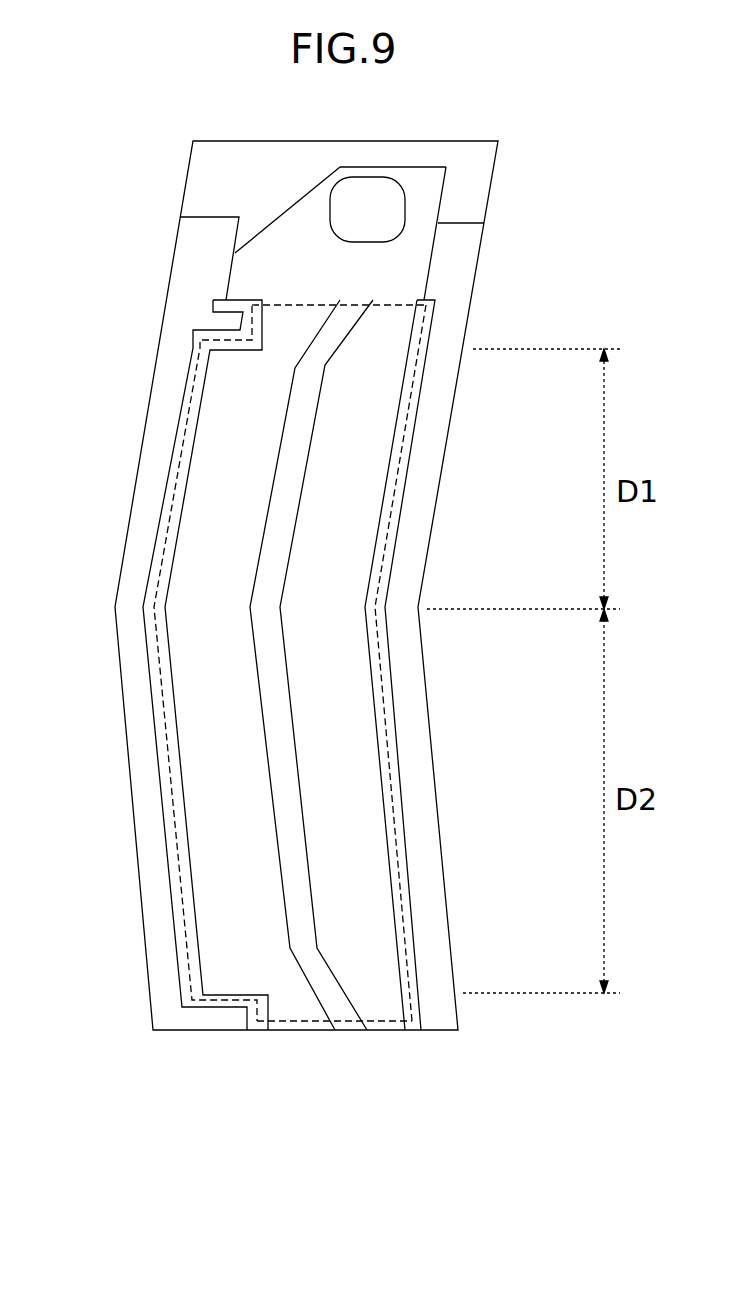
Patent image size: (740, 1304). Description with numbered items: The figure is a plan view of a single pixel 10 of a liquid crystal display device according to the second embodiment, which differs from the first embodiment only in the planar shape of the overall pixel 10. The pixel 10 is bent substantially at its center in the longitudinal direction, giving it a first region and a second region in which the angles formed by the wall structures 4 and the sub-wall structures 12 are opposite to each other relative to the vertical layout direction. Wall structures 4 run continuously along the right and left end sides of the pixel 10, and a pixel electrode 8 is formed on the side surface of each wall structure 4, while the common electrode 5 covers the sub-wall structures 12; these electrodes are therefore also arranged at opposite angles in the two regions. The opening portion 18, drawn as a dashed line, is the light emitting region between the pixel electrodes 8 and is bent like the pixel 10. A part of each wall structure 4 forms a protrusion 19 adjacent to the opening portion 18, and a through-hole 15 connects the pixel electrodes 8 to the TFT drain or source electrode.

The wall structure 4 is at (148, 815).
The common electrode 5 is at (250, 148).
The pixel electrode 8 is at (227, 428).
The pixel 10 is at (304, 615).
The sub-wall structure 12 is at (328, 998).
The through-hole 15 is at (373, 197).
The opening portion 18 is at (387, 1021).
The protrusion 19 is at (188, 250).